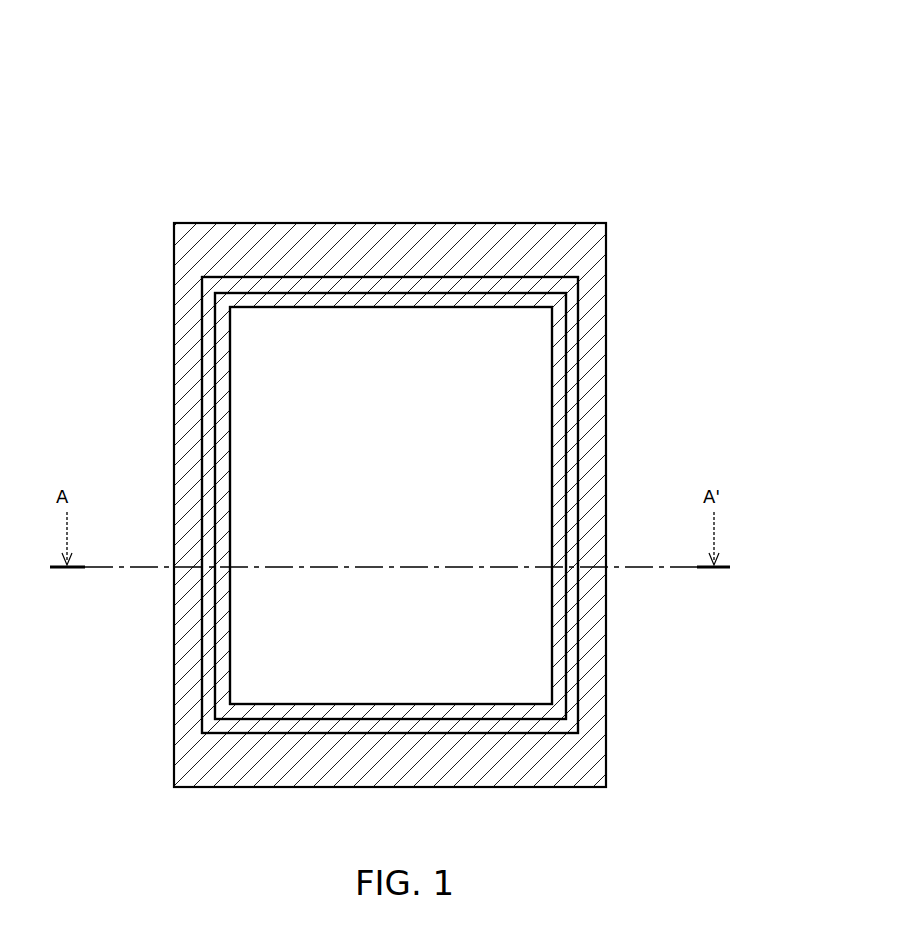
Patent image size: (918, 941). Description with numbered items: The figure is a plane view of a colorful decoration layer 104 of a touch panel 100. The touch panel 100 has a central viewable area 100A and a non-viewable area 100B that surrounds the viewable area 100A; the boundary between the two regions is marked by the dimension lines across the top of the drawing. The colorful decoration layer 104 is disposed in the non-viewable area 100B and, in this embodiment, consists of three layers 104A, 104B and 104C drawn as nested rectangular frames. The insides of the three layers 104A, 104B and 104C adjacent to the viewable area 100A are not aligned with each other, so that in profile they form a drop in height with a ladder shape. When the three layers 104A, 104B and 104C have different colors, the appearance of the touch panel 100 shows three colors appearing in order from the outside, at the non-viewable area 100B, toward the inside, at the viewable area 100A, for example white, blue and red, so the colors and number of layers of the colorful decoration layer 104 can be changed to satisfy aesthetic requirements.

The touch panel 100 is at (626, 78).
The viewable area 100A is at (551, 221).
The non-viewable area 100B is at (174, 221).
The colorful decoration layer 104 is at (707, 340).
The first layer of colorful decoration layer 104A is at (580, 346).
The second layer of colorful decoration layer 104B is at (580, 380).
The third layer of colorful decoration layer 104C is at (608, 411).